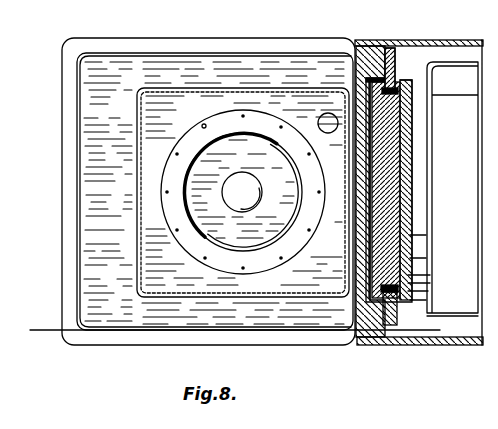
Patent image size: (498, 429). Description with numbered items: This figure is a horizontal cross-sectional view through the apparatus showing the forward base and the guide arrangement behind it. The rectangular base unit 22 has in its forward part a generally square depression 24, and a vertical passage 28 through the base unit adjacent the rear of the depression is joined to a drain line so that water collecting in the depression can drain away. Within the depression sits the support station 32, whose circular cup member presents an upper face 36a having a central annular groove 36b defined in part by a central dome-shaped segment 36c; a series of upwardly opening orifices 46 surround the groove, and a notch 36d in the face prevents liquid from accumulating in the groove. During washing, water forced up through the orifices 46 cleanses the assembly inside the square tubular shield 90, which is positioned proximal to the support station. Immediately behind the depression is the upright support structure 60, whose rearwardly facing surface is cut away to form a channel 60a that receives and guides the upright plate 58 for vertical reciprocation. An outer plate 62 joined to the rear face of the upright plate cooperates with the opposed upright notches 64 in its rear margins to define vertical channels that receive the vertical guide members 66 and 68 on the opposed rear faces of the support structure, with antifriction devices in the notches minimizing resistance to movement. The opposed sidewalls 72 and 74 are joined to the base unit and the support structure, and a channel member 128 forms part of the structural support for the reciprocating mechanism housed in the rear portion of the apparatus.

The base unit 22 is at (54, 171).
The depression 24 is at (92, 303).
The vertical passage 28 is at (322, 116).
The support station 32 is at (152, 169).
The upper face 36a is at (177, 229).
The central annular groove 36b is at (270, 232).
The dome-shaped segment 36c is at (223, 177).
The notch 36d is at (303, 192).
The orifices 46 is at (201, 124).
The upright plate 58 is at (385, 167).
The support structure 60 is at (365, 55).
The channel 60a is at (373, 215).
The outer plate 62 is at (407, 137).
The upright notches 64 is at (443, 262).
The vertical guide member 66 is at (392, 63).
The vertical guide member 68 is at (401, 326).
The sidewall 72 is at (456, 342).
The sidewall 74 is at (457, 38).
The tubular shield 90 is at (137, 233).
The channel member 128 is at (428, 292).